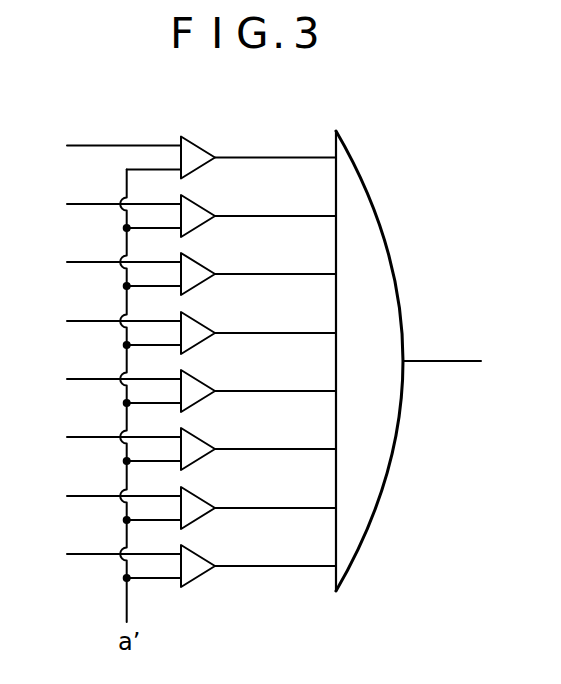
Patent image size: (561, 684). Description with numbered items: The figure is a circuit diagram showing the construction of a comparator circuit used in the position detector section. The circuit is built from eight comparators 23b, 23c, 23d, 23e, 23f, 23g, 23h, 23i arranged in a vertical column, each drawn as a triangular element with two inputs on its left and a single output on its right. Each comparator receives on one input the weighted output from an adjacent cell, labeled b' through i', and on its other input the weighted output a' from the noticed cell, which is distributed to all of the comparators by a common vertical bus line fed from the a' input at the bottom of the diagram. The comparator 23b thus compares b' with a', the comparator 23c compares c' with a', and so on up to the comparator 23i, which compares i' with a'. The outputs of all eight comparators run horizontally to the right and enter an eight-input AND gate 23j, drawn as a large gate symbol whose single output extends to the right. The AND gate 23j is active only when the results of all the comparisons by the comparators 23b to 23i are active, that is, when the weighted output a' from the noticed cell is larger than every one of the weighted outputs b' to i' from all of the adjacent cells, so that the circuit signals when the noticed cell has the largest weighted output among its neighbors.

The comparator 23b is at (201, 552).
The comparator 23c is at (201, 494).
The comparator 23d is at (201, 435).
The comparator 23e is at (201, 377).
The comparator 23f is at (201, 319).
The comparator 23g is at (201, 260).
The comparator 23h is at (201, 202).
The comparator 23i is at (201, 144).
The 8 input AND gate 23j is at (375, 204).